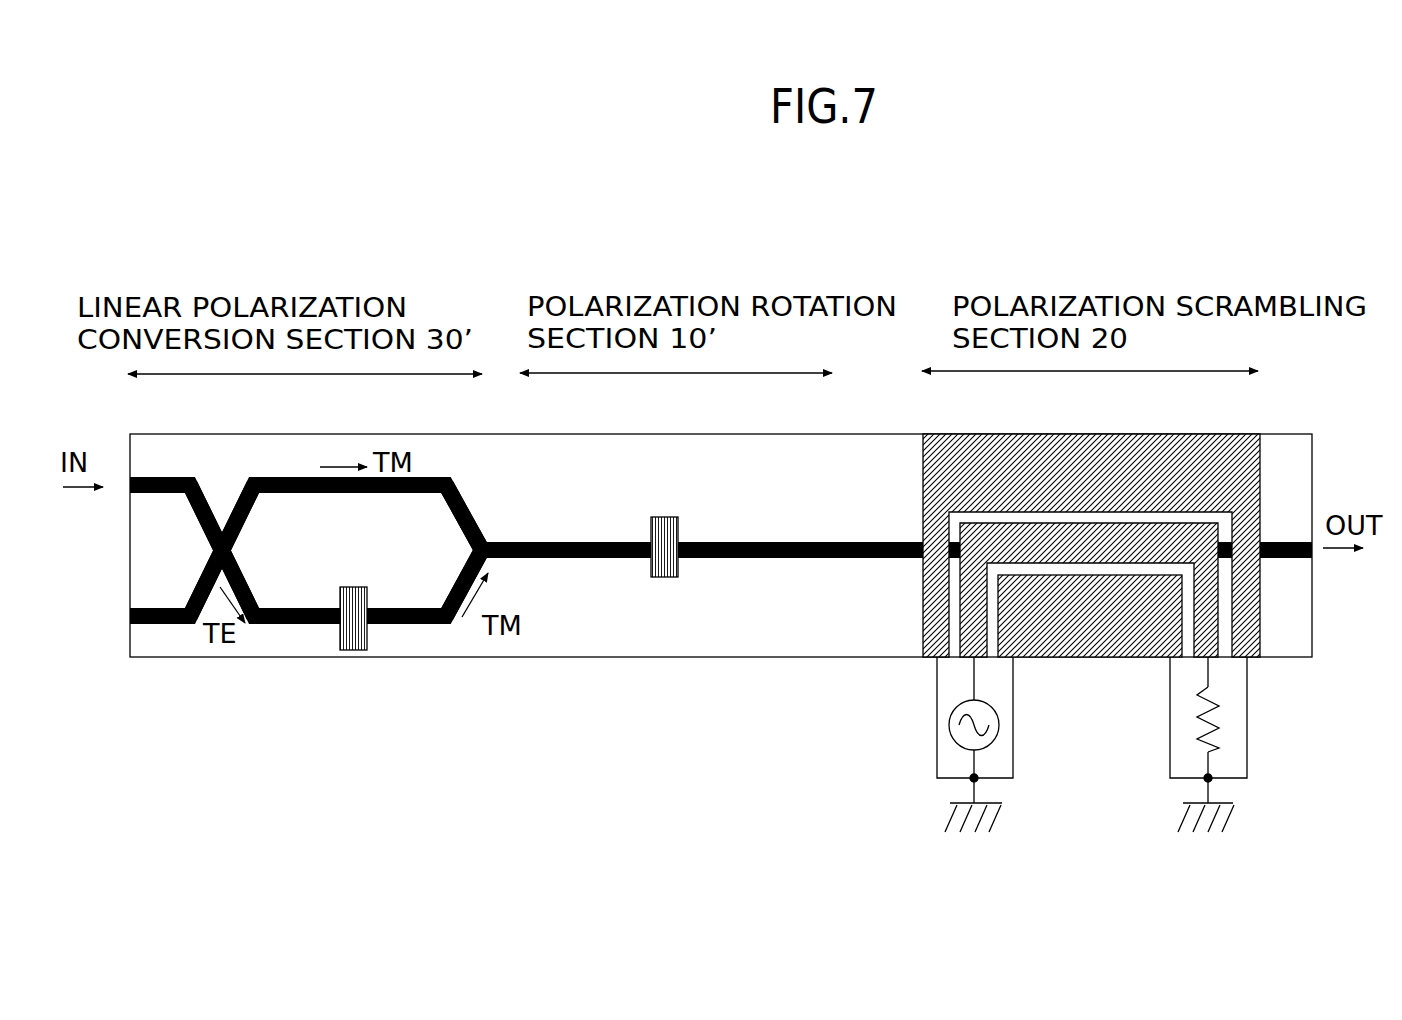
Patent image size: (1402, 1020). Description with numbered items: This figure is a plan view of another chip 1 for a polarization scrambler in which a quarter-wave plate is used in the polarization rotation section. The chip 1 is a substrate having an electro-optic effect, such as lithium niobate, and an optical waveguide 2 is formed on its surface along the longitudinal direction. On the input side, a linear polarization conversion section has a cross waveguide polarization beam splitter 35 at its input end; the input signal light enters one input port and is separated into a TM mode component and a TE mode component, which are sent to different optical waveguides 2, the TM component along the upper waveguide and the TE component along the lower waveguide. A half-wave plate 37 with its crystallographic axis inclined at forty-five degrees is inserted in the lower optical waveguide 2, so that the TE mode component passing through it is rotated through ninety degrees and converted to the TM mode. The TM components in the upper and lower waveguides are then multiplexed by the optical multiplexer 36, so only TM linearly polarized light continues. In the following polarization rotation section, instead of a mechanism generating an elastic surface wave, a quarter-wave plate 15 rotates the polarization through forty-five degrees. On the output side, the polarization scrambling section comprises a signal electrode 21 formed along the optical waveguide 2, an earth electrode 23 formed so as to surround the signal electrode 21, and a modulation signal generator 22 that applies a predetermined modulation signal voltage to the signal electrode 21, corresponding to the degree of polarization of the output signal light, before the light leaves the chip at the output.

The chip 1 is at (129, 436).
The optical waveguide 2 is at (192, 522).
The cross waveguide polarization beam splitter 35 is at (222, 532).
The optical multiplexer 36 is at (482, 540).
The half-wave plate 37 is at (352, 650).
The quarter-wave plate 15 is at (663, 577).
The earth electrode 23 is at (947, 434).
The signal electrode 21 is at (1193, 527).
The modulation signal generator 22 is at (948, 727).